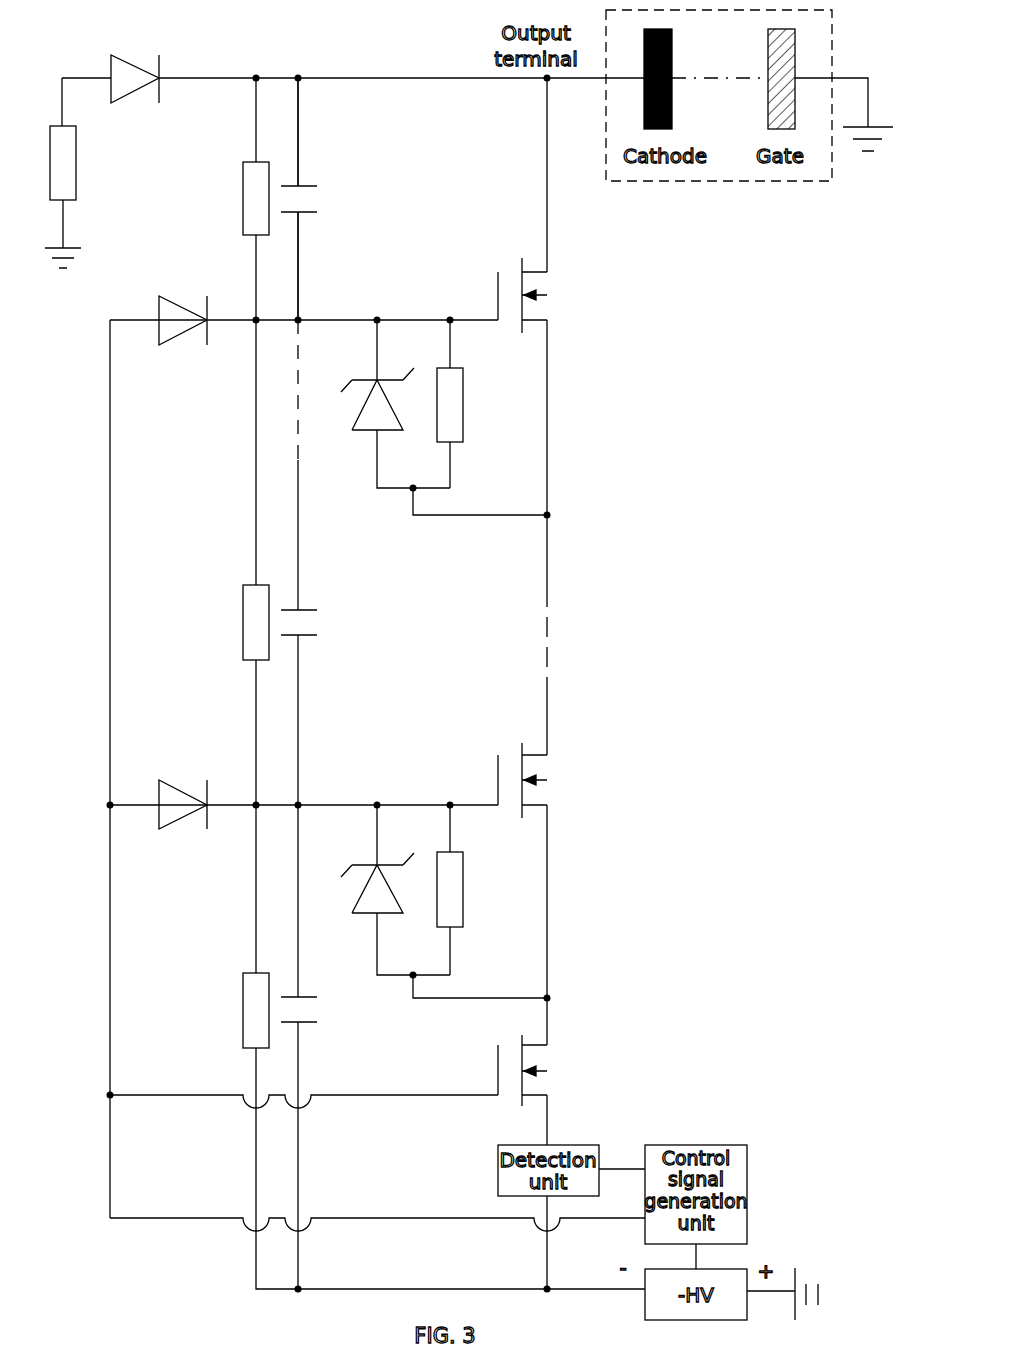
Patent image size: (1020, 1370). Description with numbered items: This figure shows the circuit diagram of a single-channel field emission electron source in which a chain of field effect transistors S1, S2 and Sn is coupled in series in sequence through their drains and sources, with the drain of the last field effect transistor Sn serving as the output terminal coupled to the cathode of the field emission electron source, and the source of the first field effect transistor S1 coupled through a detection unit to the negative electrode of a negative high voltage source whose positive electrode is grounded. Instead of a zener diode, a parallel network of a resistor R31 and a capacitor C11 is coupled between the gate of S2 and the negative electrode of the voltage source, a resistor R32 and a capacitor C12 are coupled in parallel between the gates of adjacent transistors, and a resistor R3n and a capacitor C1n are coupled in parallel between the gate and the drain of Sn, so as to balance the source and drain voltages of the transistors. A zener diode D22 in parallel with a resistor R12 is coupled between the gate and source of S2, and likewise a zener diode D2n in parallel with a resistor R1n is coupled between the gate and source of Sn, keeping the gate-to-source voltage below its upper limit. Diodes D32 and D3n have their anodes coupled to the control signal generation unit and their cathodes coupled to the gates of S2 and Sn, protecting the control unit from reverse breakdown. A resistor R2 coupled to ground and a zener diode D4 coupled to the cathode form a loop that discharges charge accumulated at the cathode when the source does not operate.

The resistor R2 is at (82, 173).
The zener diode D4 is at (135, 97).
The resistor R3n is at (226, 198).
The capacitor C1n is at (327, 199).
The diode D3n is at (182, 339).
The zener diode D2n is at (431, 417).
The resistor R1n is at (472, 404).
The field effect transistor Sn is at (549, 295).
The resistor R32 is at (226, 622).
The capacitor C12 is at (327, 624).
The diode D32 is at (182, 823).
The zener diode D22 is at (431, 901).
The resistor R12 is at (472, 890).
The field effect transistor S2 is at (549, 780).
The resistor R31 is at (226, 1010).
The capacitor C11 is at (327, 1011).
The field effect transistor S1 is at (549, 1070).